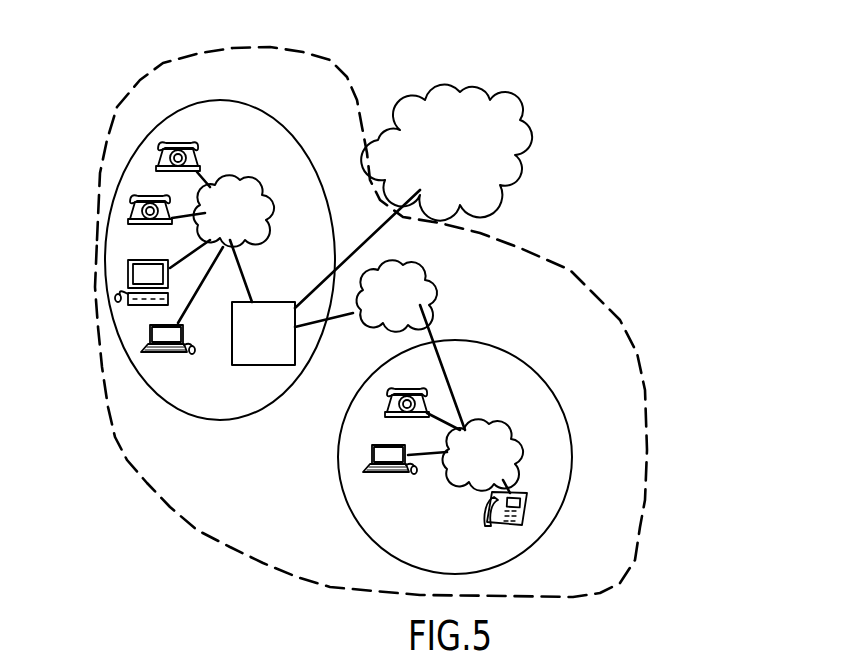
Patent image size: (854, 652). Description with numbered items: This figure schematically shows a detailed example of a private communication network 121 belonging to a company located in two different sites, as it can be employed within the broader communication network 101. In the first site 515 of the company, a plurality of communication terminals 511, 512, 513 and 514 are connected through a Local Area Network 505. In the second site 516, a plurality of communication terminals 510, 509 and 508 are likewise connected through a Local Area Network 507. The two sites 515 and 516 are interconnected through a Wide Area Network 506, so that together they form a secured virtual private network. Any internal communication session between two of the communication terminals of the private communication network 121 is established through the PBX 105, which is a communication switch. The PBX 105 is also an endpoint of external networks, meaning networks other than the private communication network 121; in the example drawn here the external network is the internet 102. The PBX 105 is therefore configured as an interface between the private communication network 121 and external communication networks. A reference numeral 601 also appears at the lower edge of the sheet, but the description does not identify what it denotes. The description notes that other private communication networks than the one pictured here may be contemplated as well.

The communication network 101 is at (606, 171).
The internet 102 is at (453, 88).
The PBX 105 is at (260, 365).
The private communication network 121 is at (631, 323).
The Local Area Network (LAN) 505 is at (263, 205).
The Wide Area Network (WAN) 506 is at (430, 285).
The Local Area Network (LAN) 507 is at (496, 420).
The communication terminal 508 is at (520, 527).
The communication terminal 509 is at (392, 483).
The communication terminal 510 is at (386, 404).
The communication terminal 511 is at (155, 353).
The communication terminal 512 is at (128, 304).
The communication terminal 513 is at (128, 210).
The communication terminal 514 is at (200, 166).
The first site 515 is at (283, 130).
The second site 516 is at (538, 373).
The reference numeral (adjacent figure) 601 is at (245, 643).